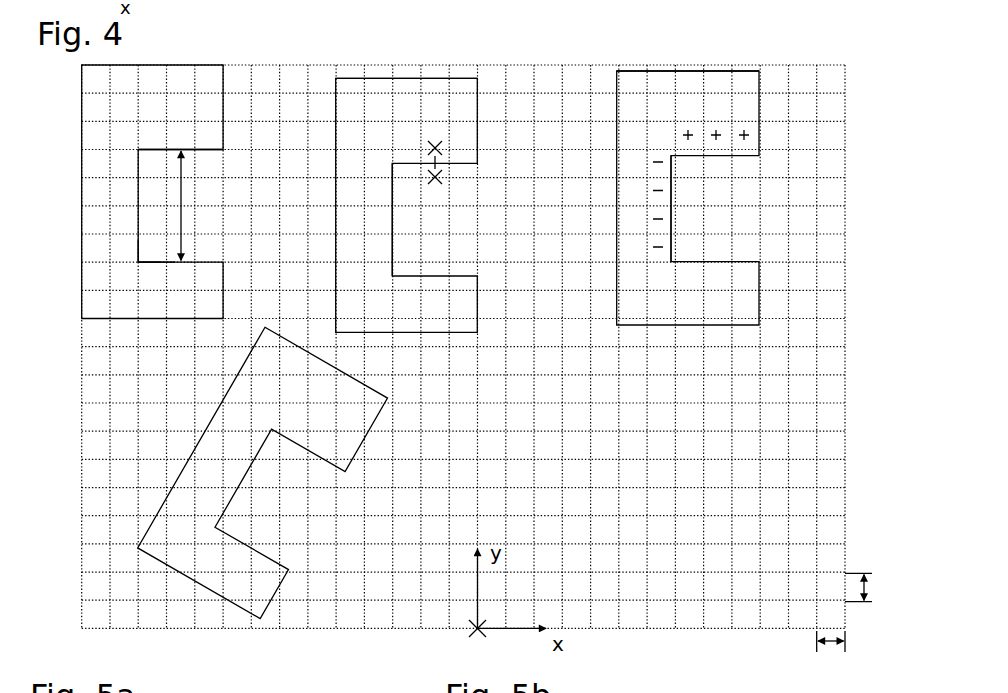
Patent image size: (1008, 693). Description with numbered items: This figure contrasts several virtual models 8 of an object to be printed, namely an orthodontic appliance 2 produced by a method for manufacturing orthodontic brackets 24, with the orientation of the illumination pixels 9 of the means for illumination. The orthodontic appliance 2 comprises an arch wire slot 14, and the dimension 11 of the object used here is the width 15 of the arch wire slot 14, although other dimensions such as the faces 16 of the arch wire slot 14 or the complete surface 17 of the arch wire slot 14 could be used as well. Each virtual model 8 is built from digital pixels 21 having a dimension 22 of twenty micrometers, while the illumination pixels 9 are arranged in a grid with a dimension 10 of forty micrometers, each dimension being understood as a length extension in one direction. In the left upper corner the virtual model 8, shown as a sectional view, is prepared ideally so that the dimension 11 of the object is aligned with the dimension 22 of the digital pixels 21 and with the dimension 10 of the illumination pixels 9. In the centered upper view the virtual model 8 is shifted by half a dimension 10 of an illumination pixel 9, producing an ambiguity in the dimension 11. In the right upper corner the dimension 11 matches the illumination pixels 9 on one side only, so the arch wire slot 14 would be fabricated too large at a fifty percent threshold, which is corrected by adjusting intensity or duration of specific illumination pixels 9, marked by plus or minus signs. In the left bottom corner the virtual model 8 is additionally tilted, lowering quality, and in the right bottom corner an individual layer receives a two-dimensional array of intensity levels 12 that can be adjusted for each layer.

The orthodontic appliance 2 is at (178, 80).
The virtual model 8 is at (606, 70).
The illumination pixel 9 is at (830, 560).
The dimension of the illumination pixel 10 is at (859, 623).
The dimension of the object 11 is at (157, 147).
The intensity levels 12 is at (761, 461).
The arch wire slot 14 is at (754, 220).
The width of the arch wire slot 15 is at (195, 206).
The faces of the arch wire slot 16 is at (411, 176).
The complete surface of the arch wire slot 17 is at (672, 168).
The digital pixel 21 is at (135, 272).
The dimension of the digital pixel 22 is at (138, 272).
The orthodontic bracket 24 is at (377, 103).